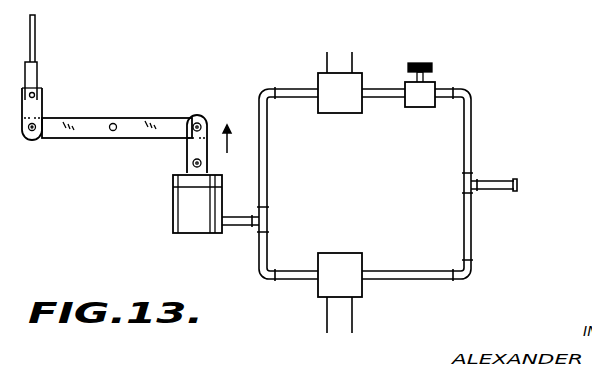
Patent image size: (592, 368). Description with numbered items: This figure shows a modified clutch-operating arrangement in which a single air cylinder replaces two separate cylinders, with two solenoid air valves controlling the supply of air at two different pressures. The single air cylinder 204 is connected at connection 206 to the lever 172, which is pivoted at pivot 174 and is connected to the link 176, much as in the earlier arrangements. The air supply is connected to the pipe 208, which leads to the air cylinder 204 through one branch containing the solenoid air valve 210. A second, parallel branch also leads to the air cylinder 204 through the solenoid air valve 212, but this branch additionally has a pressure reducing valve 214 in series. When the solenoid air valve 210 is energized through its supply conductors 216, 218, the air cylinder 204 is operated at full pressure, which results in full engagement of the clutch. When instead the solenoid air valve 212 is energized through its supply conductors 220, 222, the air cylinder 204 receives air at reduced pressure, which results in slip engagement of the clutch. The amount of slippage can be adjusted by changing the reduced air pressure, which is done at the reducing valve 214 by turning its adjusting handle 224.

The lever 172 is at (140, 130).
The pivot 174 is at (110, 131).
The link 176 is at (38, 108).
The air cylinder 204 is at (182, 218).
The connection 206 is at (195, 122).
The pipe 208 is at (500, 180).
The solenoid air valve 210 is at (340, 260).
The solenoid air valve 212 is at (337, 108).
The pressure reducing valve 214 is at (418, 105).
The supply conductor 216 is at (322, 310).
The supply conductor 218 is at (352, 313).
The supply conductor 220 is at (327, 62).
The supply conductor 222 is at (352, 63).
The handle 224 is at (433, 65).